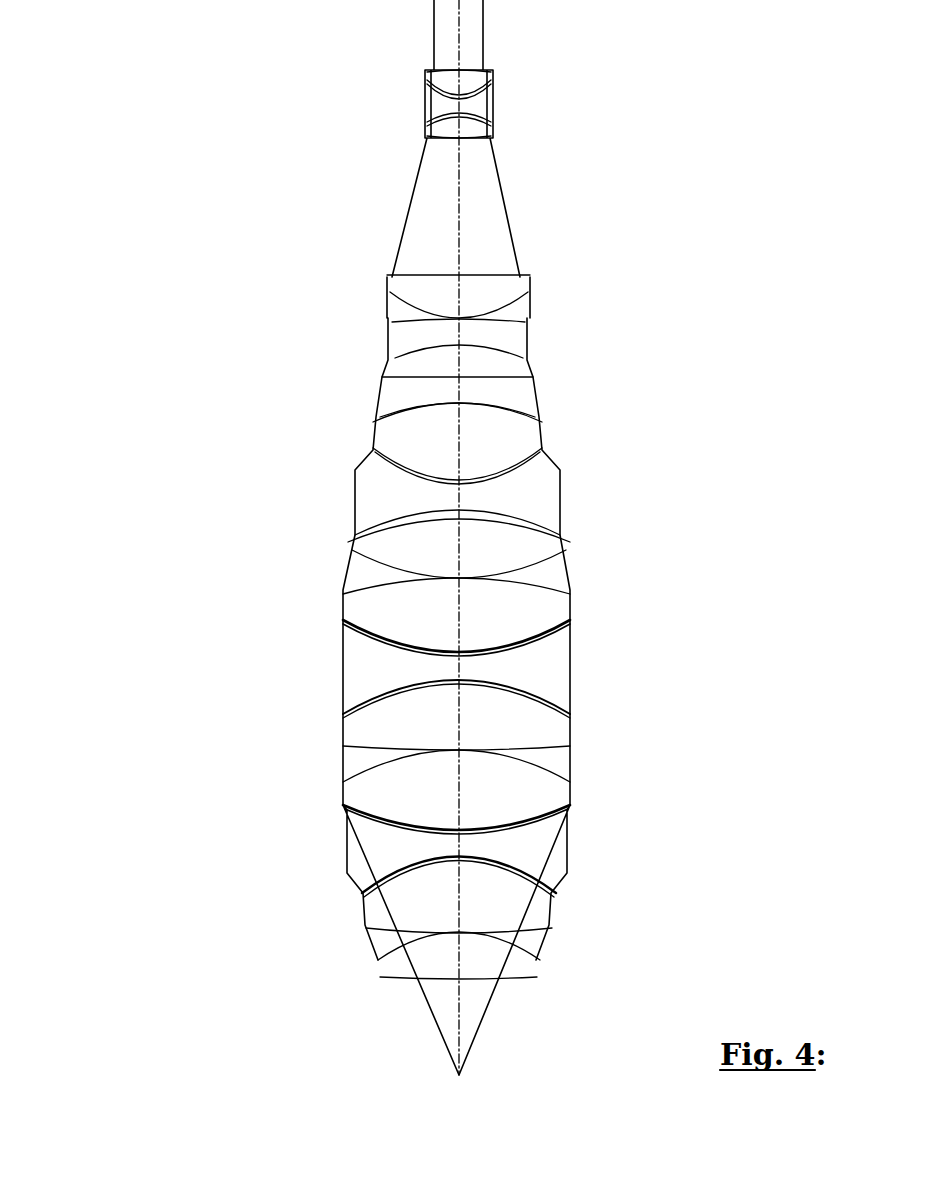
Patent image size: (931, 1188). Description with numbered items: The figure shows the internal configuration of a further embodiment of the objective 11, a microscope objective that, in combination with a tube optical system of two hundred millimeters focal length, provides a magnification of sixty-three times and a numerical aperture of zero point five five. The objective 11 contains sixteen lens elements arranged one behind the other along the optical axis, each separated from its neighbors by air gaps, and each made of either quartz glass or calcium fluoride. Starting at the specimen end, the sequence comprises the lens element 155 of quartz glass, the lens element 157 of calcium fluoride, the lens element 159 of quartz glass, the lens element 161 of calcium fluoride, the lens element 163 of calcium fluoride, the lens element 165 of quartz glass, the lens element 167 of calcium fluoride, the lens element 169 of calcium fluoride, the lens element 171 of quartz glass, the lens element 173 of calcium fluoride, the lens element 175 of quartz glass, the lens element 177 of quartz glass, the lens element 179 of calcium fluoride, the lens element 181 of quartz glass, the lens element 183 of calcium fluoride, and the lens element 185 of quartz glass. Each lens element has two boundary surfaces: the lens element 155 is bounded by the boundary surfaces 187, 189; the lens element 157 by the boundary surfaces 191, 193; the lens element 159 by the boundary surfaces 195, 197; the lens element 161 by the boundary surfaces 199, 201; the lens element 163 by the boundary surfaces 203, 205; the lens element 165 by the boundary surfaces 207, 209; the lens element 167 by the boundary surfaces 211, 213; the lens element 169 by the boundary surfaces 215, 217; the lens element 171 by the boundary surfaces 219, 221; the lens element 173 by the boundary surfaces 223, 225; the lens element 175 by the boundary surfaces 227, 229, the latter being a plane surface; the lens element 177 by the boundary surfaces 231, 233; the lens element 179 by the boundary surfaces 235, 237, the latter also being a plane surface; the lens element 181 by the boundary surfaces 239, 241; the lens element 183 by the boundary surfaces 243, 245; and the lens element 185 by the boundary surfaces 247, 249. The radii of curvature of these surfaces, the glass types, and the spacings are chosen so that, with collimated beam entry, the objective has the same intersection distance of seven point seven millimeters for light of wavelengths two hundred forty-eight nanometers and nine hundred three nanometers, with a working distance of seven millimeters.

The objective 11 is at (158, 188).
The lens element 155 is at (433, 984).
The lens element 157 is at (468, 909).
The lens element 159 is at (415, 851).
The lens element 161 is at (509, 784).
The lens element 163 is at (479, 715).
The lens element 165 is at (512, 663).
The lens element 167 is at (484, 607).
The lens element 169 is at (520, 538).
The lens element 171 is at (433, 493).
The lens element 173 is at (417, 441).
The lens element 175 is at (505, 382).
The lens element 177 is at (422, 344).
The lens element 179 is at (422, 290).
The lens element 181 is at (410, 155).
The lens element 183 is at (498, 105).
The lens element 185 is at (422, 55).
The boundary surface 187 is at (410, 982).
The boundary surface 189 is at (500, 973).
The boundary surface 191 is at (500, 943).
The boundary surface 193 is at (517, 900).
The boundary surface 195 is at (500, 877).
The boundary surface 197 is at (405, 826).
The boundary surface 199 is at (387, 813).
The boundary surface 201 is at (540, 765).
The boundary surface 203 is at (537, 728).
The boundary surface 205 is at (365, 724).
The boundary surface 207 is at (385, 690).
The boundary surface 209 is at (500, 640).
The boundary surface 211 is at (510, 612).
The boundary surface 213 is at (385, 598).
The boundary surface 215 is at (392, 558).
The boundary surface 217 is at (507, 548).
The boundary surface 219 is at (500, 510).
The boundary surface 221 is at (400, 484).
The boundary surface 223 is at (395, 447).
The boundary surface 225 is at (405, 423).
The boundary surface 227 is at (495, 395).
The boundary surface 229 is at (500, 375).
The boundary surface 231 is at (395, 362).
The boundary surface 233 is at (500, 327).
The boundary surface 235 is at (392, 312).
The boundary surface 237 is at (500, 275).
The boundary surface 239 is at (442, 142).
The boundary surface 241 is at (425, 130).
The boundary surface 243 is at (485, 115).
The boundary surface 245 is at (495, 96).
The boundary surface 247 is at (440, 83).
The boundary surface 249 is at (448, 80).